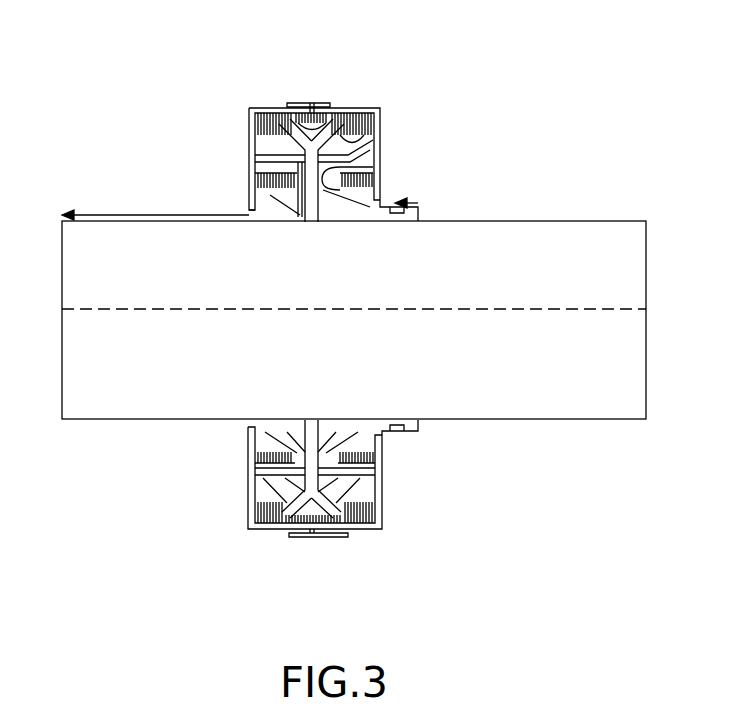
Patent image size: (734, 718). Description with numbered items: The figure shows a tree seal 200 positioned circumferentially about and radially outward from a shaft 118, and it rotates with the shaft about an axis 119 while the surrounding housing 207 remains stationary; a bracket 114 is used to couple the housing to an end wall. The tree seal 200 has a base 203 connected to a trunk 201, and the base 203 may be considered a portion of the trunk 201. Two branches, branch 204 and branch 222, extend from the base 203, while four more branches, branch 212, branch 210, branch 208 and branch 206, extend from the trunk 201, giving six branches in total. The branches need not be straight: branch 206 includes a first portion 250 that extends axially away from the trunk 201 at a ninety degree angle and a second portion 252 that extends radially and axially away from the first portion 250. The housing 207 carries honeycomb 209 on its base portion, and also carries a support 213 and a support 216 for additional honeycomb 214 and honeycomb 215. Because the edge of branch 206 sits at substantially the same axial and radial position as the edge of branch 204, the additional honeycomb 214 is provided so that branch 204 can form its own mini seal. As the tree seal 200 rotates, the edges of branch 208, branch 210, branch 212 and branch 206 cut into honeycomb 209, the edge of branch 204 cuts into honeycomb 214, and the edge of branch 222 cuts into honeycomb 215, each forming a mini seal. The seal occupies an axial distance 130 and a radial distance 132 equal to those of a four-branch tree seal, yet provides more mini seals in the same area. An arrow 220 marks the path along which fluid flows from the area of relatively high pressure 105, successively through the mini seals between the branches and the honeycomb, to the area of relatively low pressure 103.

The area of relatively low pressure 103 is at (59, 110).
The area of relatively high pressure 105 is at (560, 100).
The bracket 114 is at (348, 107).
The shaft 118 is at (292, 80).
The axis 119 is at (175, 311).
The axial distance 130 is at (371, 402).
The radial distance 132 is at (237, 530).
The tree seal 200 is at (226, 122).
The trunk 201 is at (336, 207).
The base 203 is at (323, 215).
The branch 204 is at (270, 198).
The branch 206 is at (262, 143).
The housing 207 is at (381, 110).
The branch 208 is at (288, 125).
The honeycomb 209 is at (355, 127).
The branch 210 is at (328, 118).
The branch 212 is at (360, 147).
The support 213 is at (355, 165).
The honeycomb 214 is at (270, 181).
The honeycomb 215 is at (372, 178).
The support 216 is at (275, 188).
The arrow 220 is at (93, 213).
The branch 222 is at (360, 193).
The first portion 250 is at (292, 175).
The second portion 252 is at (265, 137).